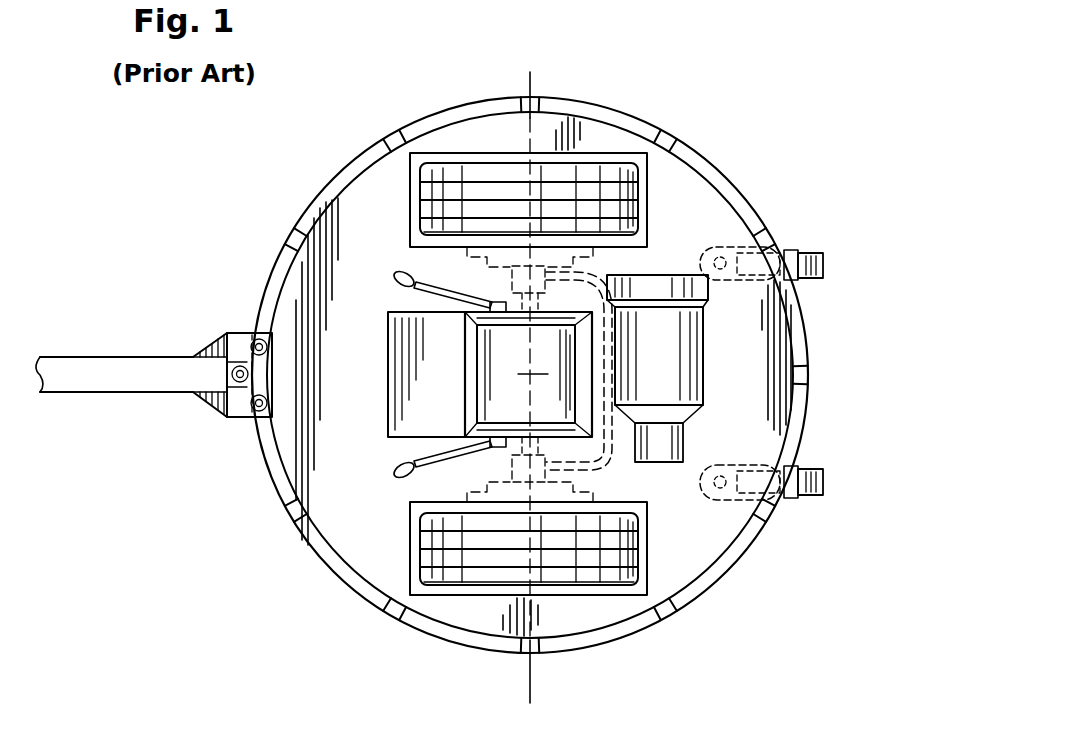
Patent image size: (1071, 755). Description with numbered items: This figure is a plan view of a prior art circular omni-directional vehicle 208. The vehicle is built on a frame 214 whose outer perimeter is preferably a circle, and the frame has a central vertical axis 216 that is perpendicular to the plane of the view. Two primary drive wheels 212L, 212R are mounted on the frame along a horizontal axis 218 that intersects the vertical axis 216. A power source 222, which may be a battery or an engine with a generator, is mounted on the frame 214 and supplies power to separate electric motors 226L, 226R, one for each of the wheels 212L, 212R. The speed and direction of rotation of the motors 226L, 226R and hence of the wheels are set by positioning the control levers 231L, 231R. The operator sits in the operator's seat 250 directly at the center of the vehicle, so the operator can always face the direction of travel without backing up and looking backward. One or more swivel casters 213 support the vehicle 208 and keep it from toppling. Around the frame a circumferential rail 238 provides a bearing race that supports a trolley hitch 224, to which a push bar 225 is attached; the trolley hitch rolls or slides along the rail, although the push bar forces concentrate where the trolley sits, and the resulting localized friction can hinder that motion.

The omni-directional vehicle 208 is at (228, 540).
The right primary drive wheel 212R is at (605, 170).
The left primary drive wheel 212L is at (455, 573).
The swivel caster 213 is at (825, 265).
The frame 214 is at (710, 210).
The central vertical axis 216 is at (531, 375).
The horizontal axis 218 is at (528, 100).
The power source 222 is at (705, 391).
The trolley hitch 224 is at (240, 335).
The push bar 225 is at (118, 393).
The right electric motor 226R is at (510, 280).
The left electric motor 226L is at (512, 467).
The right control lever 231R is at (397, 274).
The left control lever 231L is at (400, 482).
The circumferential rail 238 is at (275, 258).
The operator's seat 250 is at (470, 398).